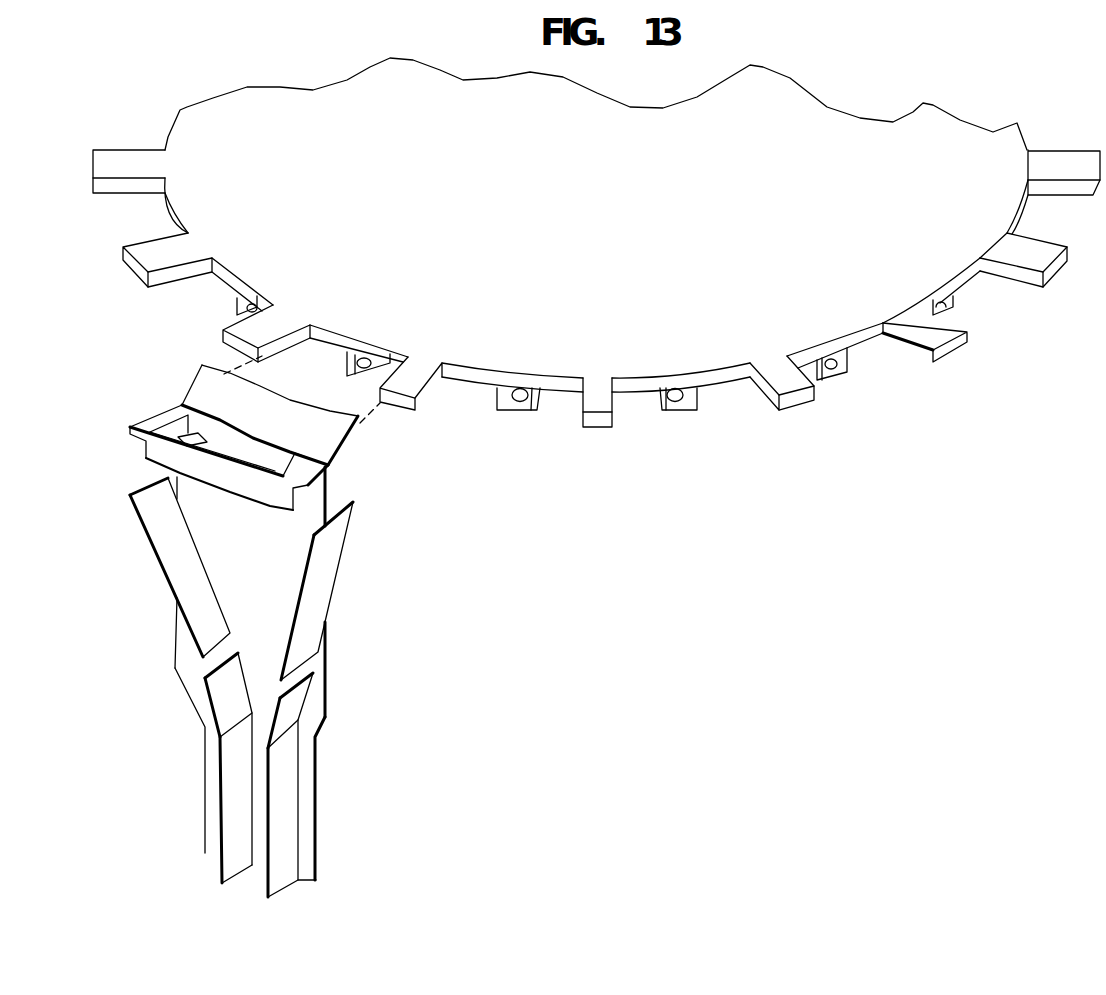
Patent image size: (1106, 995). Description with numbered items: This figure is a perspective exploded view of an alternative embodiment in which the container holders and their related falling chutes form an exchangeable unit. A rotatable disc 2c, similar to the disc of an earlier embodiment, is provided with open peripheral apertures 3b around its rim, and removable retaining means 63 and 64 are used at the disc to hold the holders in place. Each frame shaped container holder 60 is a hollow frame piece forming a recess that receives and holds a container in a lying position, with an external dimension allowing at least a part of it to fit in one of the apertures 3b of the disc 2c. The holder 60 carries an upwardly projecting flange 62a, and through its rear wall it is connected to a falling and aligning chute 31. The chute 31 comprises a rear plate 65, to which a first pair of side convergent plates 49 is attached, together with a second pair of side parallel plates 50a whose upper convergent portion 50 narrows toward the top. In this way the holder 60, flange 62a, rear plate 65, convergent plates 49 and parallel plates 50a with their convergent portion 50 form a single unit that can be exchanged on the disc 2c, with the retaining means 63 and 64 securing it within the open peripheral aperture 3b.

The rotatable disc 2c is at (583, 229).
The open peripheral apertures 3b is at (991, 322).
The falling and aligning chute 31 is at (290, 592).
The side convergent plates 49 is at (338, 542).
The upper convergent portion 50 is at (300, 700).
The side parallel plates 50a is at (292, 780).
The frame shaped container holder 60 is at (152, 450).
The upwardly projecting flange 62a is at (198, 385).
The removable retaining means 63 is at (498, 402).
The removable retaining means 64 is at (521, 400).
The rear plate 65 is at (230, 526).